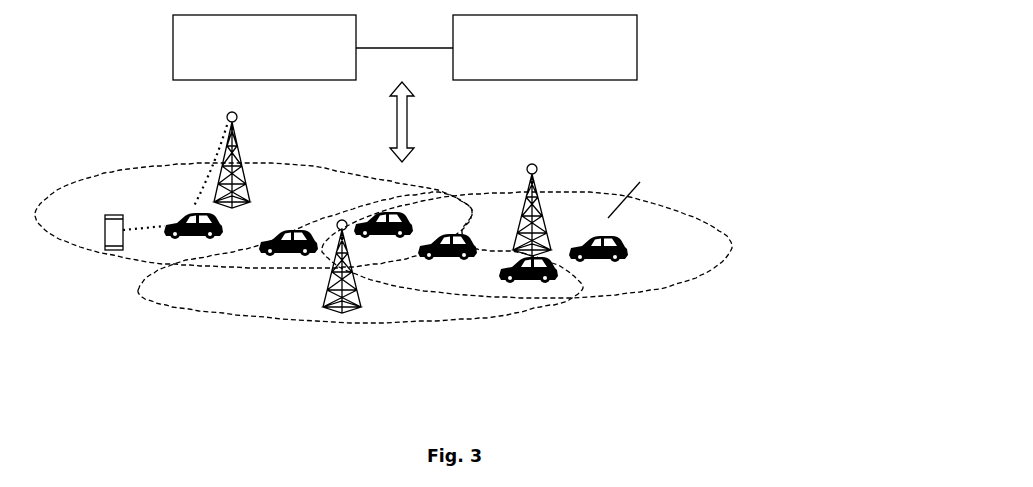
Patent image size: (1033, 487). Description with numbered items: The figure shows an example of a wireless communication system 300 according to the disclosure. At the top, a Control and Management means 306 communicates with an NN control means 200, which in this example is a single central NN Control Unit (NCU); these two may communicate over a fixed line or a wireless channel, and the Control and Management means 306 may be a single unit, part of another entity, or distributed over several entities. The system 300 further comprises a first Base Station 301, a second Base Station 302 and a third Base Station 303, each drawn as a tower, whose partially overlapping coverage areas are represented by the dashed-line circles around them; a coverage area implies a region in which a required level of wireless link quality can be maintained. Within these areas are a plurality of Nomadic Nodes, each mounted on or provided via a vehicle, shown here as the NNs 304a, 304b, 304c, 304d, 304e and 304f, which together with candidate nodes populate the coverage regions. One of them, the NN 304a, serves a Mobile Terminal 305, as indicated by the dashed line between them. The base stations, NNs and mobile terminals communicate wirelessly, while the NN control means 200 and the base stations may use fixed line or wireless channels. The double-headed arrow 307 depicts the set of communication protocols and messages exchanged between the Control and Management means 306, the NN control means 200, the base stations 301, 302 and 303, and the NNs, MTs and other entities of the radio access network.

The NN control means 200 is at (622, 26).
The wireless communication system 300 is at (802, 101).
The first Base Station (BS1) 301 is at (237, 117).
The second Base Station (BS2) 302 is at (535, 165).
The third Base Station (BS3) 303 is at (340, 220).
The nomadic node (NN) 304a is at (187, 238).
The nomadic node (NN) 304b is at (287, 255).
The nomadic node (NN) 304c is at (383, 237).
The nomadic node (NN) 304d is at (453, 258).
The nomadic node (NN) 304e is at (537, 283).
The nomadic node (NN) 304f is at (608, 262).
The Mobile Terminal (MT) 305 is at (110, 233).
The Control and Management means 306 is at (192, 34).
The arrow 307 is at (406, 113).